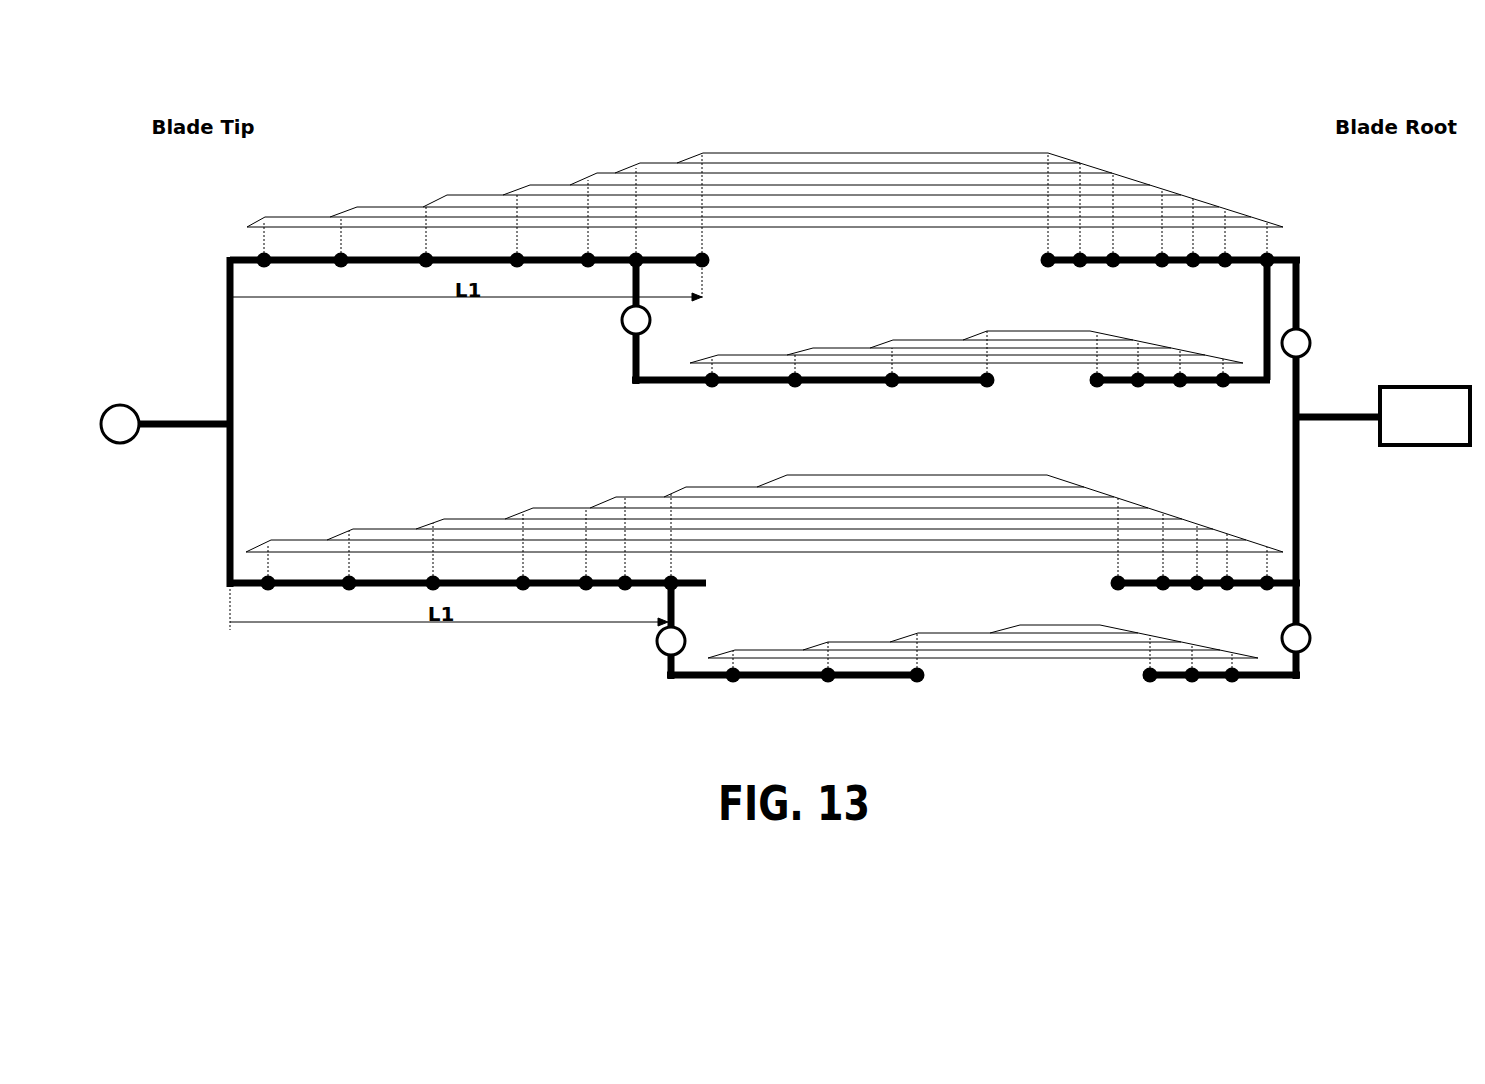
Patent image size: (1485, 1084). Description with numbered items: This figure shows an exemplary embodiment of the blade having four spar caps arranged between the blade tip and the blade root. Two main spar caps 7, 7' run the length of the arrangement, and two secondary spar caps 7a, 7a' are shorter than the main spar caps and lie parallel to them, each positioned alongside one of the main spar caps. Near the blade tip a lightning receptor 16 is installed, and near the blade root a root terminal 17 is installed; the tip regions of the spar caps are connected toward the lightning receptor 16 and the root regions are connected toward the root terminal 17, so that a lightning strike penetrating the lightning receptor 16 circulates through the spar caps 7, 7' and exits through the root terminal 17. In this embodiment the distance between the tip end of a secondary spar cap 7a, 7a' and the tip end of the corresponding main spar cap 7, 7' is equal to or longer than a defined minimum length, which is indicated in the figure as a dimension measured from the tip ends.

The main spar cap 7 is at (765, 155).
The secondary spar cap 7a is at (966, 318).
The main spar cap 7' is at (764, 494).
The secondary spar cap 7a' is at (983, 693).
The lightning receptor 16 is at (116, 418).
The root terminal 17 is at (1427, 410).